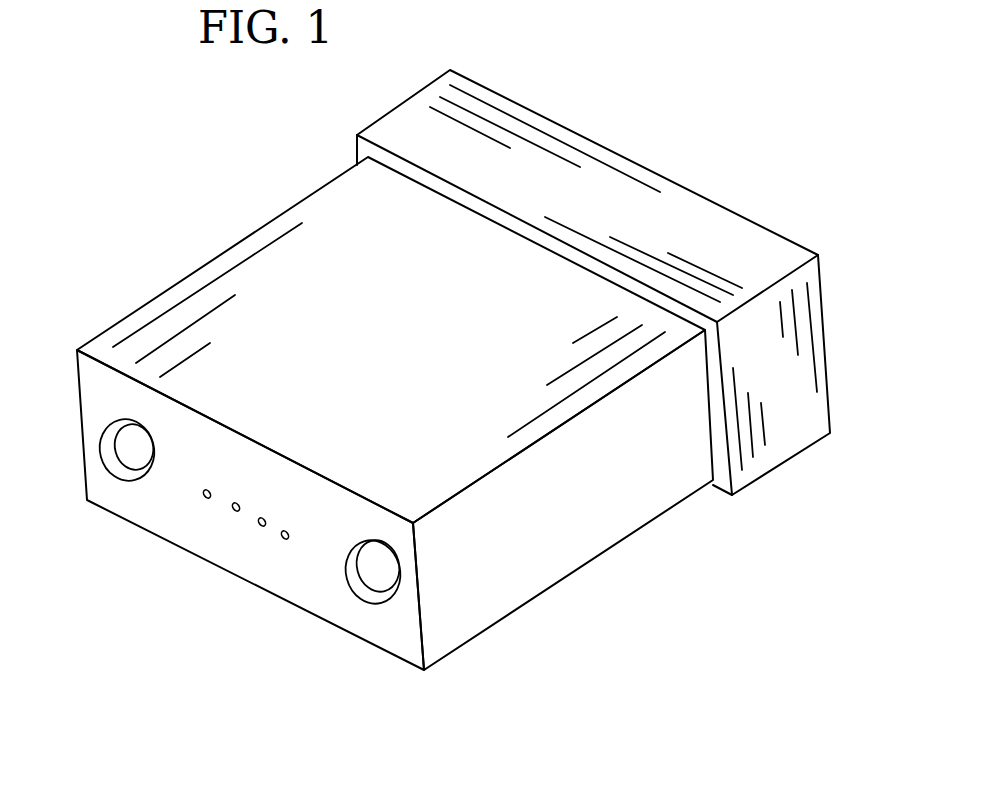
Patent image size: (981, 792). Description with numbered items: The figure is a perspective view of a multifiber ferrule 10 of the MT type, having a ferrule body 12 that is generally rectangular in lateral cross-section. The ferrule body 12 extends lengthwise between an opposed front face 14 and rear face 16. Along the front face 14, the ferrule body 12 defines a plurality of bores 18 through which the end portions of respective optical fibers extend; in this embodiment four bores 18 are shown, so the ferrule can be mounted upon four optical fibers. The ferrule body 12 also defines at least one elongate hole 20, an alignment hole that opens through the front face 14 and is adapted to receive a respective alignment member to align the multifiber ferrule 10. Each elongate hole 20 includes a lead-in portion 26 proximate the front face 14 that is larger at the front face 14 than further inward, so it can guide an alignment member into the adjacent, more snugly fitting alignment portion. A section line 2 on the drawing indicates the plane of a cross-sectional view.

The section line 2- 2 is at (595, 141).
The multifiber ferrule 10 is at (256, 208).
The ferrule body 12 is at (577, 513).
The front face 14 is at (402, 625).
The rear face 16 is at (827, 370).
The bores 18 is at (284, 540).
The elongate hole 20 is at (132, 447).
The lead-in portion 26 is at (365, 587).